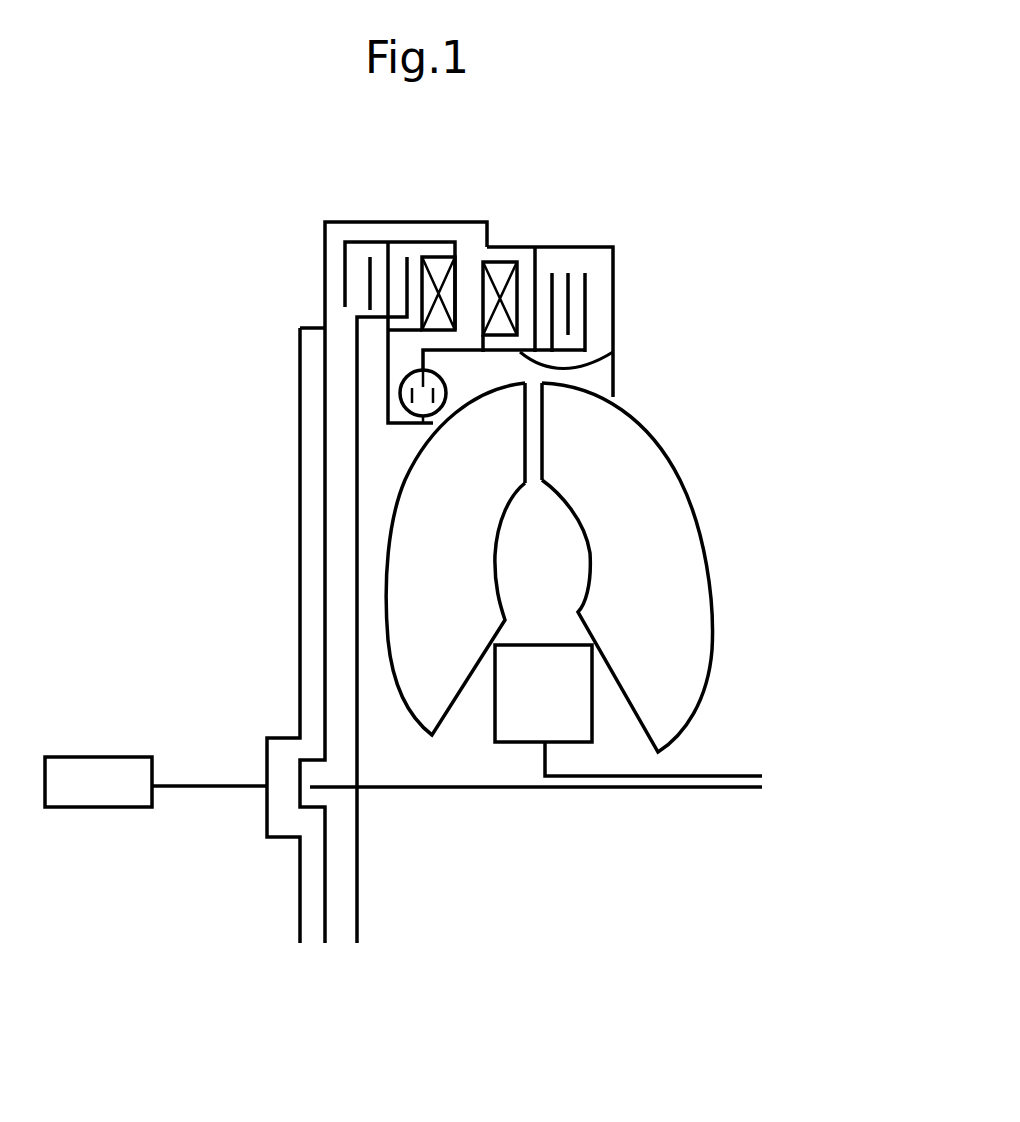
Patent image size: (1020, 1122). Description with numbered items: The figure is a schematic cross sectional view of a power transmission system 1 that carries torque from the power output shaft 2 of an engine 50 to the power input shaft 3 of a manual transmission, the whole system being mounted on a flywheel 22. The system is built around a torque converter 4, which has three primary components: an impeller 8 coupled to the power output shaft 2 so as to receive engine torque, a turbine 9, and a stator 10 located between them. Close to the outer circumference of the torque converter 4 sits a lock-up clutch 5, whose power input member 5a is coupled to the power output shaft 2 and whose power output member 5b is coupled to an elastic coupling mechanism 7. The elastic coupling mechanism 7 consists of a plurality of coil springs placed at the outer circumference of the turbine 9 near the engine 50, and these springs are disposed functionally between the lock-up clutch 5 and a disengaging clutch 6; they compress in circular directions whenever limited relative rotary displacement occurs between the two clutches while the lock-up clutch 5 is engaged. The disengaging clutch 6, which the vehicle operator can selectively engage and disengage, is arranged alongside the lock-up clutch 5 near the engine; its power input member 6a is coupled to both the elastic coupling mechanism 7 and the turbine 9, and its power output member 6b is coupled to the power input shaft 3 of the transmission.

The power transmission system 1 is at (785, 275).
The power output shaft 2 is at (185, 780).
The power input shaft 3 is at (713, 788).
The torque converter 4 is at (519, 579).
The lock-up clutch 5 is at (550, 278).
The power input member 5a is at (403, 222).
The power output member 5b is at (613, 352).
The disengaging clutch 6 is at (333, 553).
The power input member 6a is at (390, 376).
The power output member 6b is at (352, 650).
The elastic coupling mechanism 7 is at (393, 442).
The impeller 8 is at (612, 475).
The turbine 9 is at (398, 570).
The stator 10 is at (550, 697).
The flywheel 22 is at (297, 887).
The engine 50 is at (98, 808).